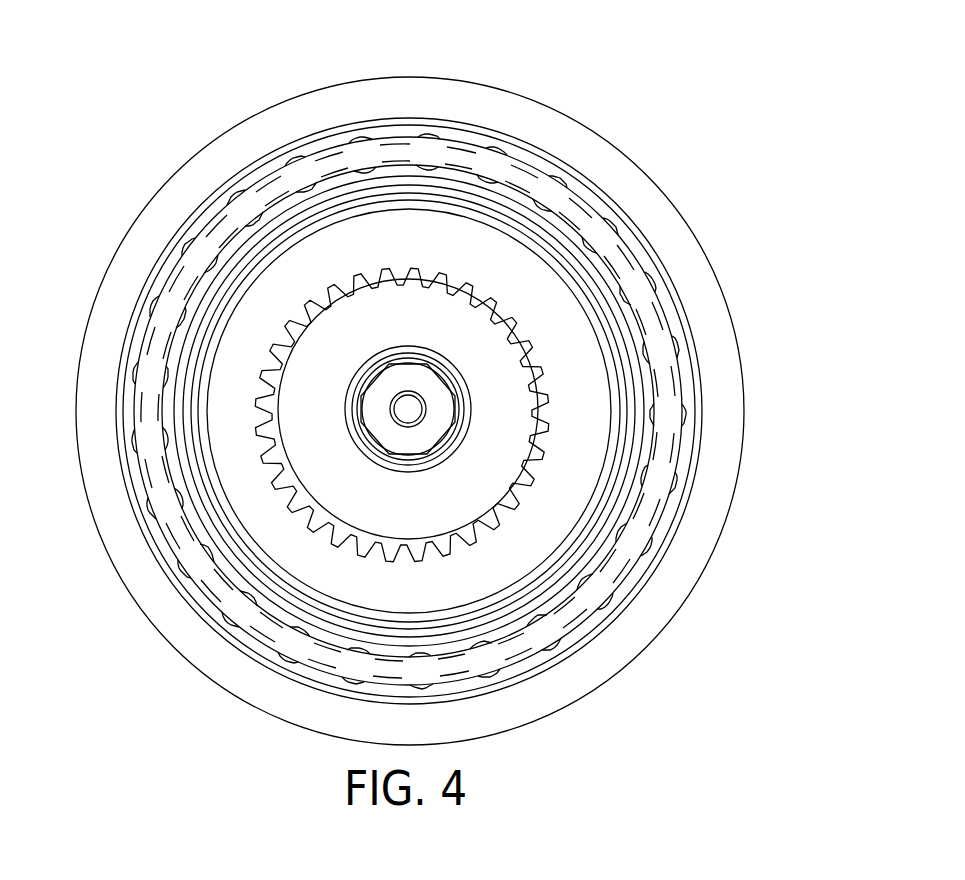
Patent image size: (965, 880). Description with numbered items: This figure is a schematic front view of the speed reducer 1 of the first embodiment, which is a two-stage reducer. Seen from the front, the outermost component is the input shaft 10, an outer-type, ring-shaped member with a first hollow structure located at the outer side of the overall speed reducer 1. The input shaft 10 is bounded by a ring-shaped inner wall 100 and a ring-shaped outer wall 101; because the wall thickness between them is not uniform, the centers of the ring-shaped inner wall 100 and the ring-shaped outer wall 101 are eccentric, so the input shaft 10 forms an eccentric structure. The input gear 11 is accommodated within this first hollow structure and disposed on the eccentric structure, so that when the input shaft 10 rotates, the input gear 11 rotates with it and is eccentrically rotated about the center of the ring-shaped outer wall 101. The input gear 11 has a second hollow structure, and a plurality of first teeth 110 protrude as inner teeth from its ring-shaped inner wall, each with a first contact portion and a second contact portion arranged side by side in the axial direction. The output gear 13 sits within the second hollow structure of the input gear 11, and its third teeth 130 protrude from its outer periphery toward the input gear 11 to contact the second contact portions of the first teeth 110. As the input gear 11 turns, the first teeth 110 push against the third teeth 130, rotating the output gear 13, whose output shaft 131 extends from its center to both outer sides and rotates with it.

The speed reducer 1 is at (951, 85).
The input shaft 10 is at (637, 207).
The ring-shaped inner wall 100 is at (667, 318).
The ring-shaped outer wall 101 is at (697, 247).
The input gear 11 is at (553, 320).
The first teeth 110 is at (267, 368).
The output gear 13 is at (345, 355).
The third teeth 130 is at (297, 345).
The output shaft 131 is at (422, 387).